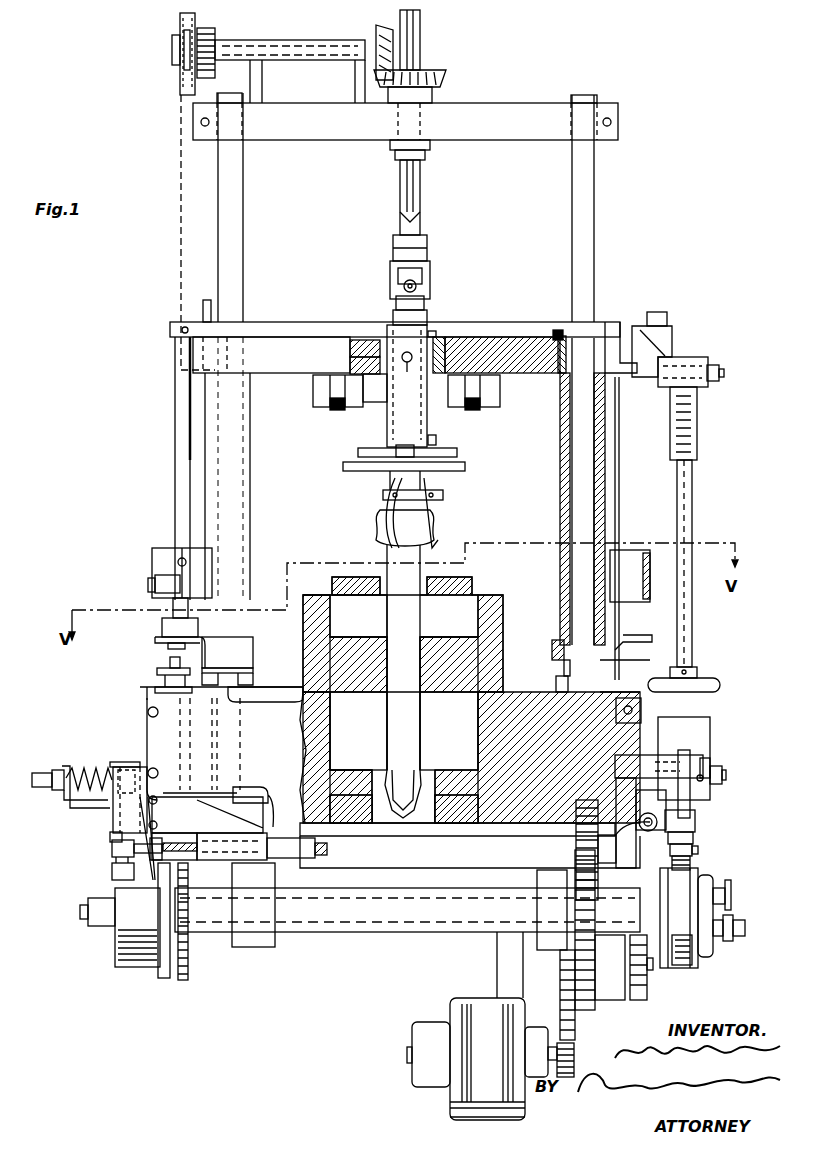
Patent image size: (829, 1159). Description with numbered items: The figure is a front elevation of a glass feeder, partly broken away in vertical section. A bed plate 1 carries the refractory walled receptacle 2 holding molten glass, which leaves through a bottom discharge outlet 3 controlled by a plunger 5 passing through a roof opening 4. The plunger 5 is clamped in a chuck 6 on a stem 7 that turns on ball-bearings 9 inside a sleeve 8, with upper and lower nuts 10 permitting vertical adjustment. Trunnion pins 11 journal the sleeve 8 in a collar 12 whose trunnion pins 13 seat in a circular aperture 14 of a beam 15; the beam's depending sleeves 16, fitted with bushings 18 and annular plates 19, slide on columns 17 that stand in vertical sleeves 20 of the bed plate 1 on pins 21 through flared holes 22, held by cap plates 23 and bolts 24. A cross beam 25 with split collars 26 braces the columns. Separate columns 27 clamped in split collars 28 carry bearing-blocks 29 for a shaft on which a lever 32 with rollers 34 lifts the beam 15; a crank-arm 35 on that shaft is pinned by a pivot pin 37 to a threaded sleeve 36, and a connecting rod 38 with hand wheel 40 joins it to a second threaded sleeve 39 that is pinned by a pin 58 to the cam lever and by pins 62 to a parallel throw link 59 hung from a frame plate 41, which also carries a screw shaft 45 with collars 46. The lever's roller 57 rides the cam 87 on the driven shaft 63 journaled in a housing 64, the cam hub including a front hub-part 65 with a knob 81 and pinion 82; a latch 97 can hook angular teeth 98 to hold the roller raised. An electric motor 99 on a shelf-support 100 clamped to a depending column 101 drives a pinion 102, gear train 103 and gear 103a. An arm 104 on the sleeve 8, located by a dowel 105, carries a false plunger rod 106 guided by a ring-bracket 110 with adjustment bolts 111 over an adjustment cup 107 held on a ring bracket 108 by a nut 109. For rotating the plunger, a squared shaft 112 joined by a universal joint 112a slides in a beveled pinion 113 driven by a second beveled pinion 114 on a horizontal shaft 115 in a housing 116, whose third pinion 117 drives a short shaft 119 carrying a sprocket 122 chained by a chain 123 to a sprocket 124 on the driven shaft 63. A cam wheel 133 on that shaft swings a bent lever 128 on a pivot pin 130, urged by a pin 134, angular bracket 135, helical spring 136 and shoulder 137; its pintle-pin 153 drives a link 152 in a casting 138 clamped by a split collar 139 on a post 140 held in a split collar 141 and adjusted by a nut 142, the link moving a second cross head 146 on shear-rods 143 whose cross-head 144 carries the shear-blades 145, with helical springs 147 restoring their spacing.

The bed plate 1 is at (281, 670).
The refractory walled receptacle 2 is at (449, 703).
The bottom discharge outlet 3 is at (403, 826).
The roof opening 4 is at (358, 703).
The plunger 5 is at (403, 681).
The chuck 6 is at (417, 509).
The stem 7 is at (430, 313).
The sleeve 8 is at (396, 448).
The ball-bearings 9 is at (436, 334).
The upper and lower nuts 10 is at (393, 318).
The trunnion pins 11 is at (350, 349).
The collar 12 is at (350, 366).
The trunnion pins 13 is at (407, 386).
The circular aperture 14 is at (445, 340).
The beam 15 is at (502, 337).
The depending sleeve 16 is at (250, 453).
The columns 17 is at (243, 273).
The bearing-metal bushings 18 is at (556, 330).
The annular plates 19 is at (558, 341).
The vertical sleeves 20 is at (615, 743).
The pins 21 is at (262, 688).
The diametric holes 22 is at (610, 682).
The cap plates 23 is at (258, 787).
The bolts 24 is at (439, 835).
The cross beam 25 is at (405, 116).
The split collars 26 is at (196, 128).
The columns 27 is at (619, 457).
The split collars 28 is at (641, 709).
The bearing-blocks 29 is at (630, 377).
The lever 32 is at (375, 388).
The rollers 34 is at (330, 410).
The crank-arm 35 is at (668, 347).
The internally threaded sleeve 36 is at (697, 442).
The pivot pin 37 is at (724, 374).
The connecting rod 38 is at (692, 516).
The second threaded sleeve 39 is at (710, 731).
The hand wheel 40 is at (720, 686).
The frame plate 41 is at (641, 823).
The screw shaft 45 is at (639, 825).
The collars 46 is at (640, 833).
The roller 57 is at (700, 863).
The pin 58 is at (700, 849).
The parallel throw link 59 is at (710, 768).
The pins 62 is at (726, 779).
The driven shaft 63 is at (82, 913).
The housing 64 is at (407, 906).
The front hub-part 65 is at (723, 923).
The knob 81 is at (745, 933).
The pinion 82 is at (731, 891).
The cam 87 is at (713, 949).
The latch 97 is at (684, 750).
The angular teeth 98 is at (700, 821).
The electric motor 99 is at (482, 1059).
The shelf-support 100 is at (450, 1109).
The depending column 101 is at (497, 969).
The pinion 102 is at (575, 1052).
The gear train 103 is at (560, 1002).
The gear 103a is at (648, 973).
The arm 104 is at (293, 322).
The dowel 105 is at (203, 306).
The false plunger rod 106 is at (175, 402).
The adjustment cup 107 is at (162, 622).
The ring bracket 108 is at (155, 639).
The nut 109 is at (168, 648).
The ring-bracket 110 is at (152, 550).
The adjustment bolts 111 is at (176, 563).
The squared shaft 112 is at (420, 195).
The universal joint 112a is at (427, 266).
The beveled pinion 113 is at (441, 84).
The second beveled pinion 114 is at (382, 30).
The horizontal shaft 115 is at (315, 40).
The housing 116 is at (307, 81).
The third pinion 117 is at (215, 36).
The short shaft 119 is at (180, 50).
The sprocket 122 is at (175, 65).
The chain 123 is at (181, 182).
The sprocket 124 is at (188, 973).
The bent lever 128 is at (112, 873).
The pivot pin 130 is at (125, 762).
The cam wheel 133 is at (115, 947).
The pin 134 is at (42, 773).
The angular bracket 135 is at (64, 807).
The helical spring 136 is at (80, 768).
The shoulder 137 is at (112, 798).
The plate or casting 138 is at (207, 815).
The split collar 139 is at (166, 838).
The post 140 is at (160, 744).
The split collar 141 is at (148, 713).
The nut 142 is at (157, 672).
The shear-rods 143 is at (112, 849).
The cross-head 144 is at (318, 850).
The shear-blades 145 is at (330, 850).
The second cross head 146 is at (240, 860).
The helical springs 147 is at (300, 858).
The link 152 is at (116, 860).
The pintle-pin 153 is at (110, 838).